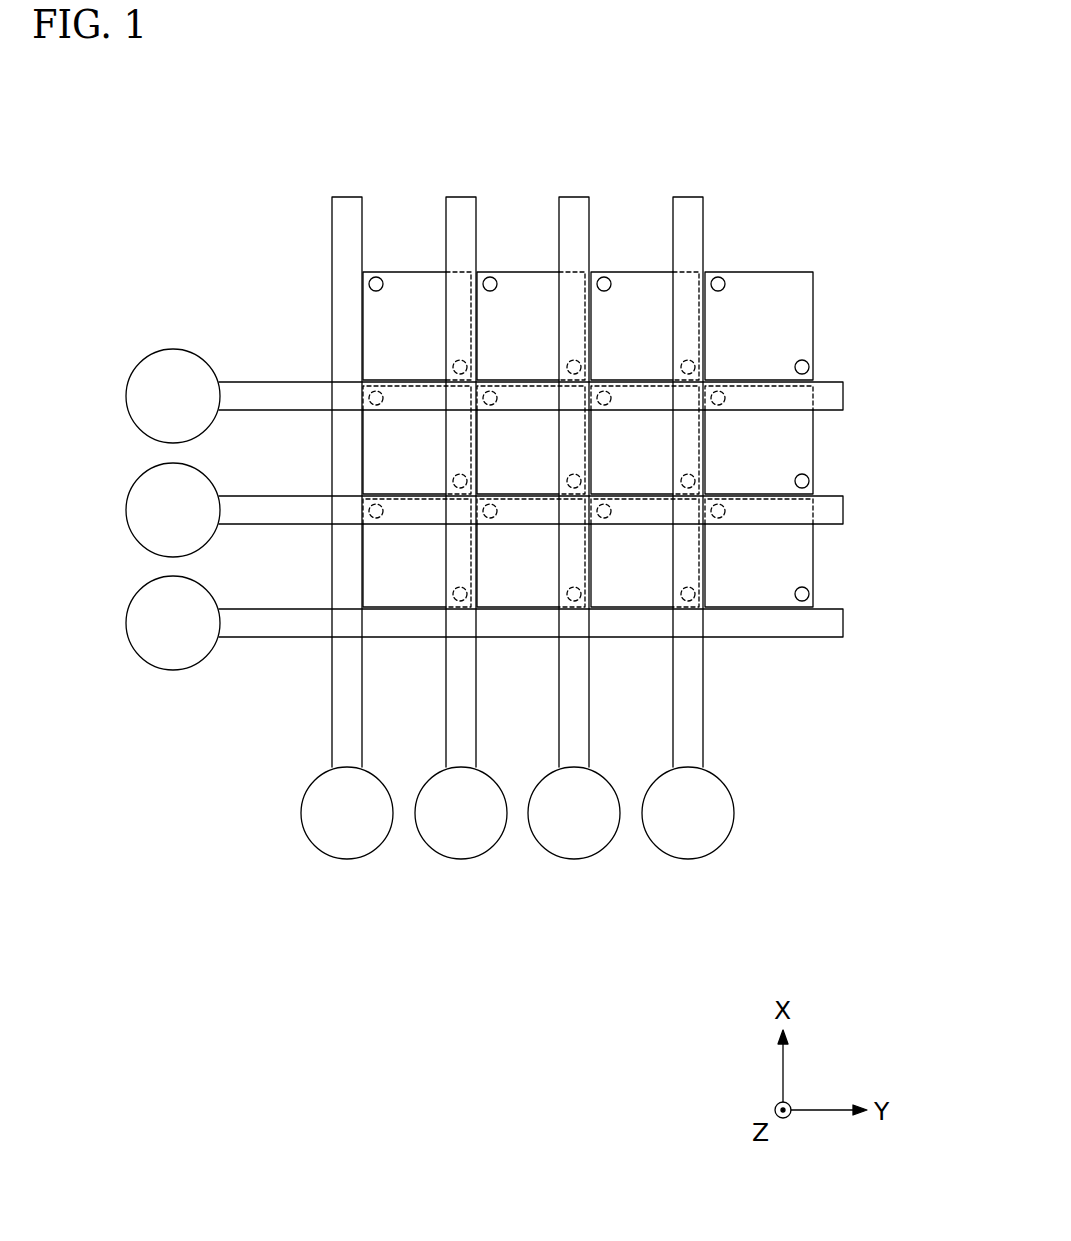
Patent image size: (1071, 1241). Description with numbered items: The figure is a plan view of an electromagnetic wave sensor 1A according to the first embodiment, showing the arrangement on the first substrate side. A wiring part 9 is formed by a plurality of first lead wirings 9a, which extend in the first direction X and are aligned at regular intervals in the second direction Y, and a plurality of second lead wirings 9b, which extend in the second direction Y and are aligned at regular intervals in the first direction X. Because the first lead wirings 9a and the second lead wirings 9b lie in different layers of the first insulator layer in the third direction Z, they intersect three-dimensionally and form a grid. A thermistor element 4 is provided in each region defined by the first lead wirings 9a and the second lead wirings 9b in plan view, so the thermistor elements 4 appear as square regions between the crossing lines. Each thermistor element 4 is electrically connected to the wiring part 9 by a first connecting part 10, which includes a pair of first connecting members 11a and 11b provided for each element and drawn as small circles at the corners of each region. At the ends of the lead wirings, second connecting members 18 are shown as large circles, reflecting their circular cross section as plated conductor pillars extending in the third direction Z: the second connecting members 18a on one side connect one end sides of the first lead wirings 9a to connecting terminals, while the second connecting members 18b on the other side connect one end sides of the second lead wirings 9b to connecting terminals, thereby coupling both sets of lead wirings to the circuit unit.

The electromagnetic wave sensor 1A is at (229, 107).
The thermistor element 4 is at (409, 300).
The wiring part 9 is at (583, 439).
The first lead wiring 9a is at (347, 212).
The second lead wiring 9b is at (832, 396).
The first connecting part 10 is at (518, 405).
The first connecting member 11a is at (453, 364).
The first connecting member 11b is at (368, 281).
The second connecting member 18 is at (387, 658).
The second connecting member on one side 18a is at (347, 861).
The second connecting member on the other side 18b is at (124, 392).